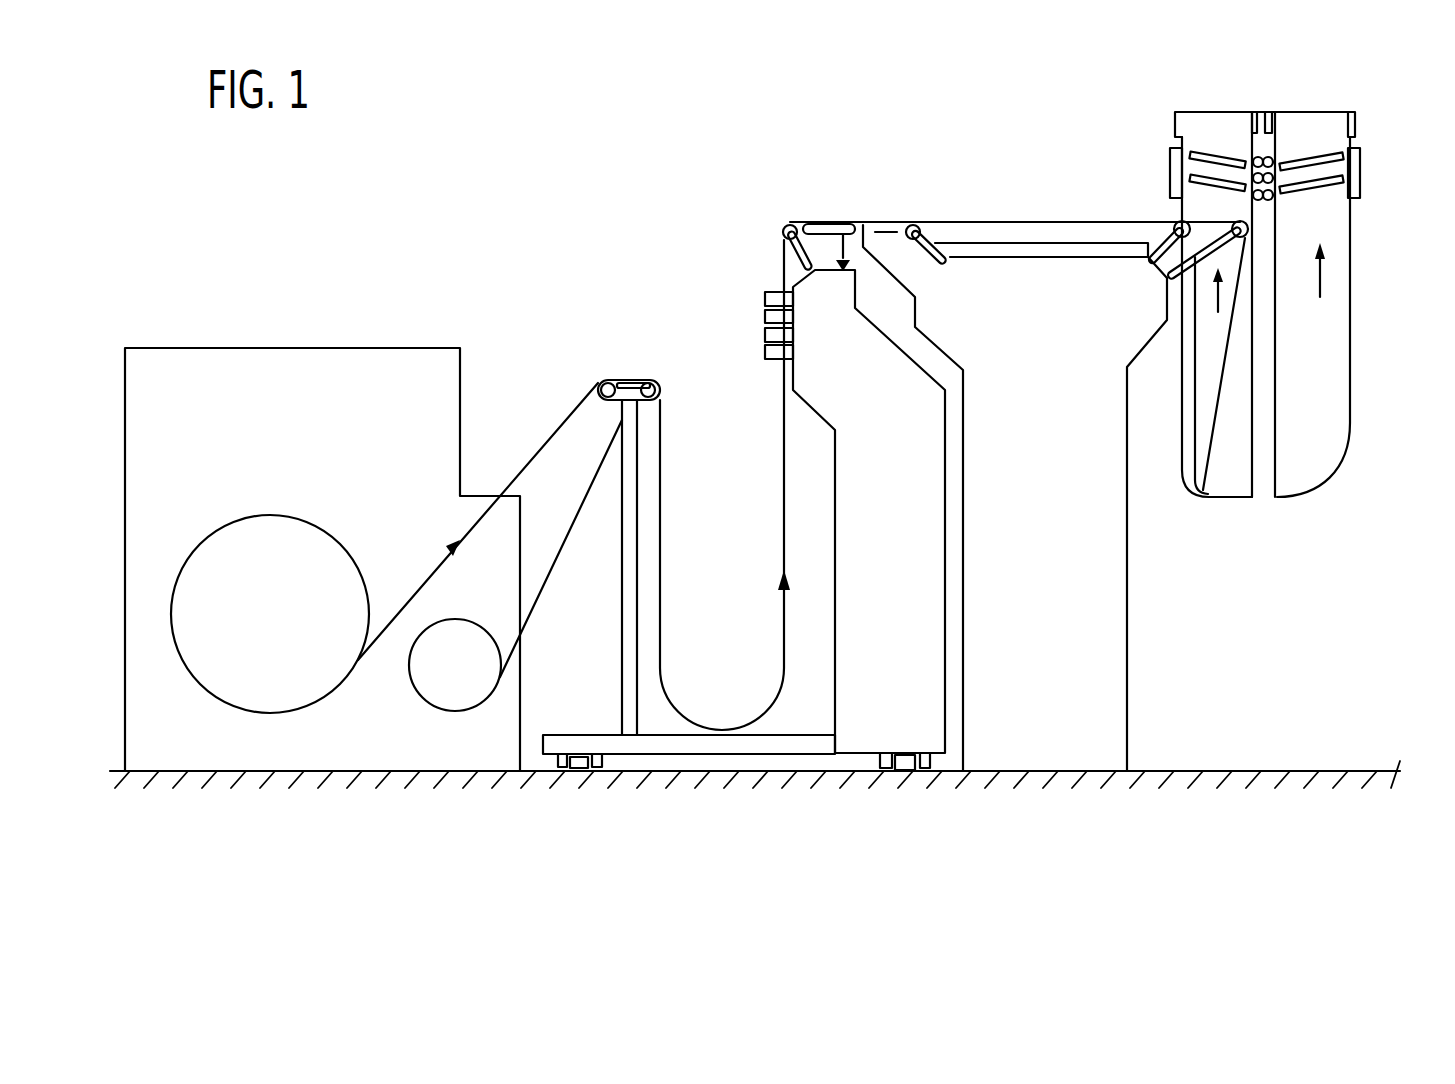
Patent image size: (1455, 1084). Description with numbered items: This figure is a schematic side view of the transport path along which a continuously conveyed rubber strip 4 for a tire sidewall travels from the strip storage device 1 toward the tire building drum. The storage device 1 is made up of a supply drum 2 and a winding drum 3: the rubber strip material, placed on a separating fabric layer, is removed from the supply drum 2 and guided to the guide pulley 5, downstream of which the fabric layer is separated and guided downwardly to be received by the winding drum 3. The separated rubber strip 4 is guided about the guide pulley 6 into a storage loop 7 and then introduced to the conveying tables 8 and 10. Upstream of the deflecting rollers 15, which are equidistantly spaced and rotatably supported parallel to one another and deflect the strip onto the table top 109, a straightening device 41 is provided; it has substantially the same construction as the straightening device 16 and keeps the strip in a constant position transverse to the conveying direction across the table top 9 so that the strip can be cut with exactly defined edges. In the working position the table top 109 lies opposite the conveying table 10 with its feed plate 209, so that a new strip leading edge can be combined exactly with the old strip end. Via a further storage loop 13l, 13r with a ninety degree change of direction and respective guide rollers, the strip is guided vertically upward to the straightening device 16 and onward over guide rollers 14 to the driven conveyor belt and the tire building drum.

The strip storage device 1 is at (350, 322).
The supply drum 2 is at (278, 678).
The winding drum 3 is at (457, 688).
The rubber strip 4 is at (522, 468).
The guide pulley 5 is at (603, 382).
The guide pulley 6 is at (648, 380).
The storage loop 7 is at (697, 730).
The conveying table 8 is at (818, 310).
The table top 9 is at (843, 195).
The conveying table 10 is at (1005, 290).
The left storage loop 13l is at (1190, 490).
The right storage loop 13r is at (1298, 482).
The guide rollers 14 is at (1355, 118).
The deflecting rollers 15 is at (790, 227).
The straightening device 16 is at (1377, 198).
The straightening device 41 is at (773, 360).
The table top 109 is at (823, 227).
The feed plate 209 is at (878, 227).